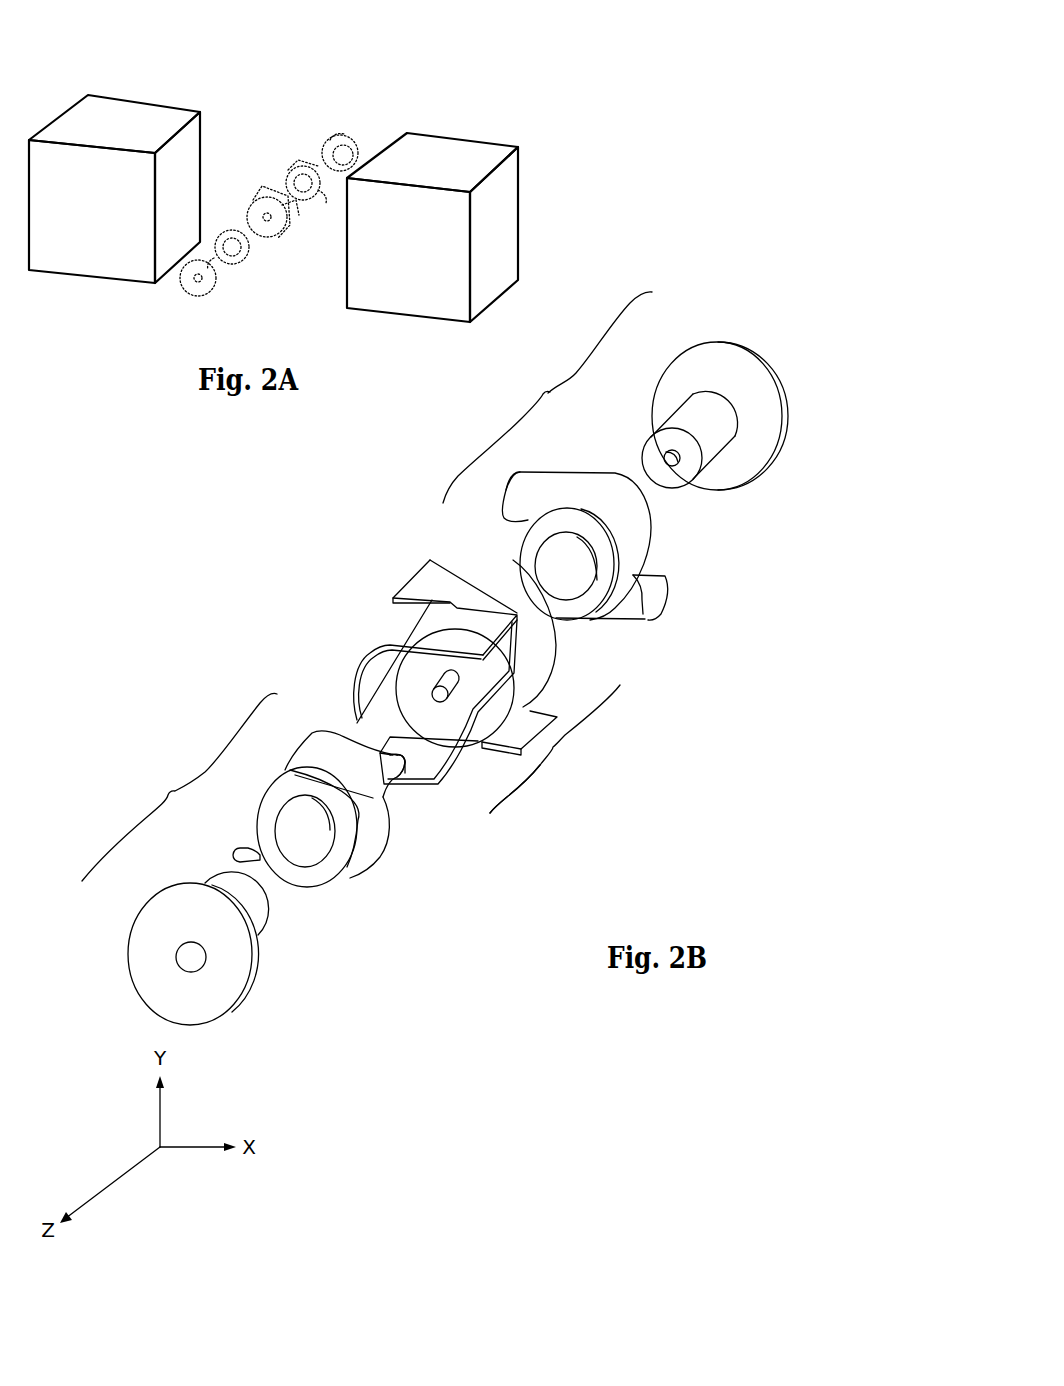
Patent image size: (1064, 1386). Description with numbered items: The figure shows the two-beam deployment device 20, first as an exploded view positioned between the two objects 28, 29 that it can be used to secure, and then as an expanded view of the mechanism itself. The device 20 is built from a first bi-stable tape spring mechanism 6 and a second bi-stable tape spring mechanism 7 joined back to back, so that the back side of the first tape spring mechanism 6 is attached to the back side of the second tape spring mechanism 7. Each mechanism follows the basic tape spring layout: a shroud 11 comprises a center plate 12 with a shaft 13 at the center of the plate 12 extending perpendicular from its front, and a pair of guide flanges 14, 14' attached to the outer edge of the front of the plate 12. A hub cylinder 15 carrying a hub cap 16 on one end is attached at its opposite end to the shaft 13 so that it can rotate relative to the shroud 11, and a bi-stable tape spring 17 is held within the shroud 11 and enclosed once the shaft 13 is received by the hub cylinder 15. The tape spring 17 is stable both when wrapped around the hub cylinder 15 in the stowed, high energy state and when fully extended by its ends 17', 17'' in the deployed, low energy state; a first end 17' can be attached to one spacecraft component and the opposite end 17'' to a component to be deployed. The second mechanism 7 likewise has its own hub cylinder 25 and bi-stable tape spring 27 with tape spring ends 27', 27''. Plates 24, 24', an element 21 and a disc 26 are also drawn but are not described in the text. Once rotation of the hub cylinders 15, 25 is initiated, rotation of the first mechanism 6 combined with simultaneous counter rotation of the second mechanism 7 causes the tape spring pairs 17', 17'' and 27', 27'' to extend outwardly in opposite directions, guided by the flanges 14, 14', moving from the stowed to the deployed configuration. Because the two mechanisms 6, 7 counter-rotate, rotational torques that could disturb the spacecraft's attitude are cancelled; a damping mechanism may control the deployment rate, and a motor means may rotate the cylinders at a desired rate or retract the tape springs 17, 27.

In FIG. 2A, the 2-beam deployment device 20 is at (162, 296).
In FIG. 2B, the 2-beam deployment device 20 is at (760, 298).
In FIG. 2A, the first object 28 is at (138, 122).
In FIG. 2A, the second object 29 is at (430, 152).
In FIG. 2B, the first bi-stable tape spring mechanism 6 is at (179, 787).
In FIG. 2B, the second bi-stable tape spring mechanism 7 is at (547, 397).
In FIG. 2B, the shroud 11 is at (521, 789).
In FIG. 2B, the axis of rotation 21 is at (555, 749).
In FIG. 2B, the center plate 12 is at (410, 693).
In FIG. 2B, the shaft 13 is at (455, 677).
In FIG. 2B, the guide flange 14 is at (431, 641).
In FIG. 2B, the guide flange 14' is at (448, 730).
In FIG. 2B, the upper plate 24 is at (436, 582).
In FIG. 2B, the lower plate 24' is at (484, 711).
In FIG. 2B, the hub cylinder 15 is at (253, 905).
In FIG. 2B, the hub cap 16 is at (200, 992).
In FIG. 2B, the bi-stable tape spring 17 is at (331, 836).
In FIG. 2B, the first end of tape spring 17' is at (407, 835).
In FIG. 2B, the opposite end of tape spring 17'' is at (221, 839).
In FIG. 2B, the hub cylinder 25 is at (718, 417).
In FIG. 2B, the second disc 26 is at (755, 453).
In FIG. 2B, the bi-stable tape spring 27 is at (605, 571).
In FIG. 2B, the first end of second tape spring 27' is at (669, 587).
In FIG. 2B, the opposite end of second tape spring 27'' is at (557, 449).